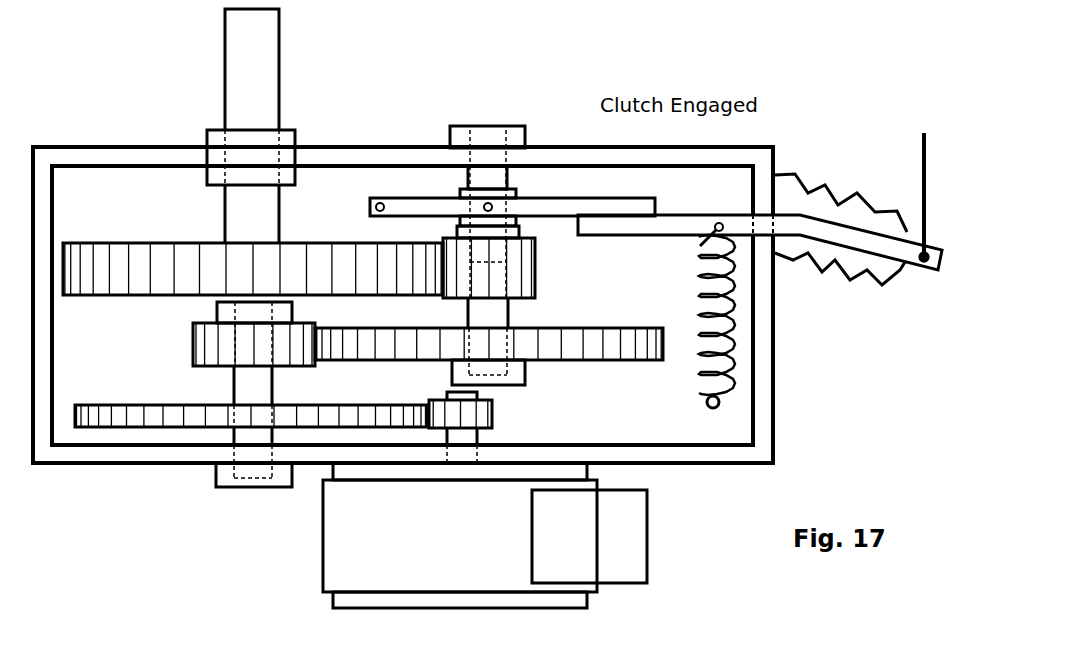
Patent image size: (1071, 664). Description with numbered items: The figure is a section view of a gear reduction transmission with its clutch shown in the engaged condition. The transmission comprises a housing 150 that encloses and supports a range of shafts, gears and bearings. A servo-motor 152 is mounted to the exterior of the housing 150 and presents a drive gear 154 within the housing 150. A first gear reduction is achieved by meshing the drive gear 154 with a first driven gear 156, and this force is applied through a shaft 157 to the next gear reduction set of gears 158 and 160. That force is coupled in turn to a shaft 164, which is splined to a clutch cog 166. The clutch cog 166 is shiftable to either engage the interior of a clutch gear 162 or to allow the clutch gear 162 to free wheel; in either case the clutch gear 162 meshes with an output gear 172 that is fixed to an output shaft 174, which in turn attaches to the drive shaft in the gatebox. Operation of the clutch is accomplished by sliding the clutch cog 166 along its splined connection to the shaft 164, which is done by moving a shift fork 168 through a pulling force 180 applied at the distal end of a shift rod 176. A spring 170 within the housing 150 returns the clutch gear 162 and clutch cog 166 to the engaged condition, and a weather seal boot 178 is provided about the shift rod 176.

The housing 150 is at (777, 418).
The servo-motor 152 is at (598, 590).
The drive gear 154 is at (493, 422).
The first driven gear 156 is at (132, 404).
The shaft 157 is at (234, 393).
The gear 158 is at (193, 352).
The gear 160 is at (583, 362).
The clutch gear 162 is at (535, 282).
The shaft 164 is at (508, 320).
The clutch cog 166 is at (457, 230).
The shift fork 168 is at (645, 198).
The spring 170 is at (698, 288).
The output gear 172 is at (132, 242).
The output shaft 174 is at (225, 70).
The shift rod 176 is at (928, 273).
The weather seal boot 178 is at (862, 193).
The pulling force 180 is at (924, 133).